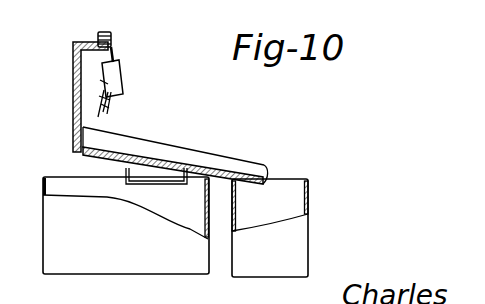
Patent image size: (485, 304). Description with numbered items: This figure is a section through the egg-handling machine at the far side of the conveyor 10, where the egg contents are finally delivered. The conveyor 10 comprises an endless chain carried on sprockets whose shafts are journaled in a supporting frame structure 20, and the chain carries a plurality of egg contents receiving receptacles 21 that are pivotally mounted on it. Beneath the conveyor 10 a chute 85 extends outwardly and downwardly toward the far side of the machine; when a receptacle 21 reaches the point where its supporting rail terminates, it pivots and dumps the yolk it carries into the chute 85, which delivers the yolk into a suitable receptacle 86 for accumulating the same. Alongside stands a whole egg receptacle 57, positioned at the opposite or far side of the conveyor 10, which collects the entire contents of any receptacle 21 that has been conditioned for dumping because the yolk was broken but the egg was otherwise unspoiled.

The conveyor 10 is at (110, 38).
The supporting frame structure 20 is at (80, 43).
The egg contents receiving receptacle 21 is at (121, 79).
The whole egg receptacle 57 is at (102, 270).
The chute 85 is at (200, 153).
The receptacle 86 is at (299, 195).